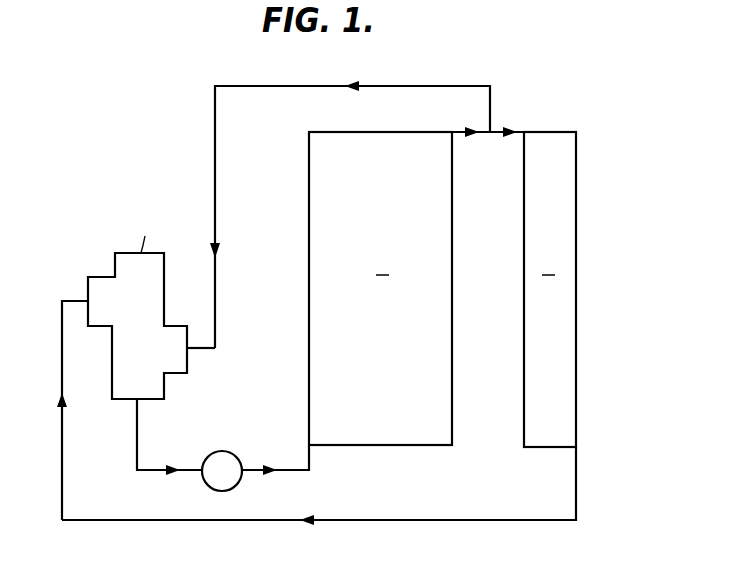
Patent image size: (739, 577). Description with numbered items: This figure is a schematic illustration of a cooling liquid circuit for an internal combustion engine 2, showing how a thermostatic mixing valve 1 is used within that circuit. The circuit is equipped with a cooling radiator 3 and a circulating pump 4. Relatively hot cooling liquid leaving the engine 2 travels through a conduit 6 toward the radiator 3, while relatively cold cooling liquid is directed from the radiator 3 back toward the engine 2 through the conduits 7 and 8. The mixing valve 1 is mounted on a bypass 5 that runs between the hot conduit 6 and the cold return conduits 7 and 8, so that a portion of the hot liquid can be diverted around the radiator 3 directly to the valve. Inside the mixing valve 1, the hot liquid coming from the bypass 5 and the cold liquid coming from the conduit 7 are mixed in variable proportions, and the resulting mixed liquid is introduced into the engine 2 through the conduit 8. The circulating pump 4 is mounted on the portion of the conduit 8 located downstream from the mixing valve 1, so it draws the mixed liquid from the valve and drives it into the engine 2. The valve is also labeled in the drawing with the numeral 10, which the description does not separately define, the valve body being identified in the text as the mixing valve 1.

The thermostatic mixing valve 1 is at (87, 257).
The internal combustion engine 2 is at (380, 288).
The cooling radiator 3 is at (588, 289).
The circulating pump 4 is at (226, 452).
The bypass 5 is at (396, 86).
The conduit 6 is at (519, 132).
The conduit 7 is at (369, 520).
The conduit 8 is at (288, 473).
The valve 10 is at (156, 287).